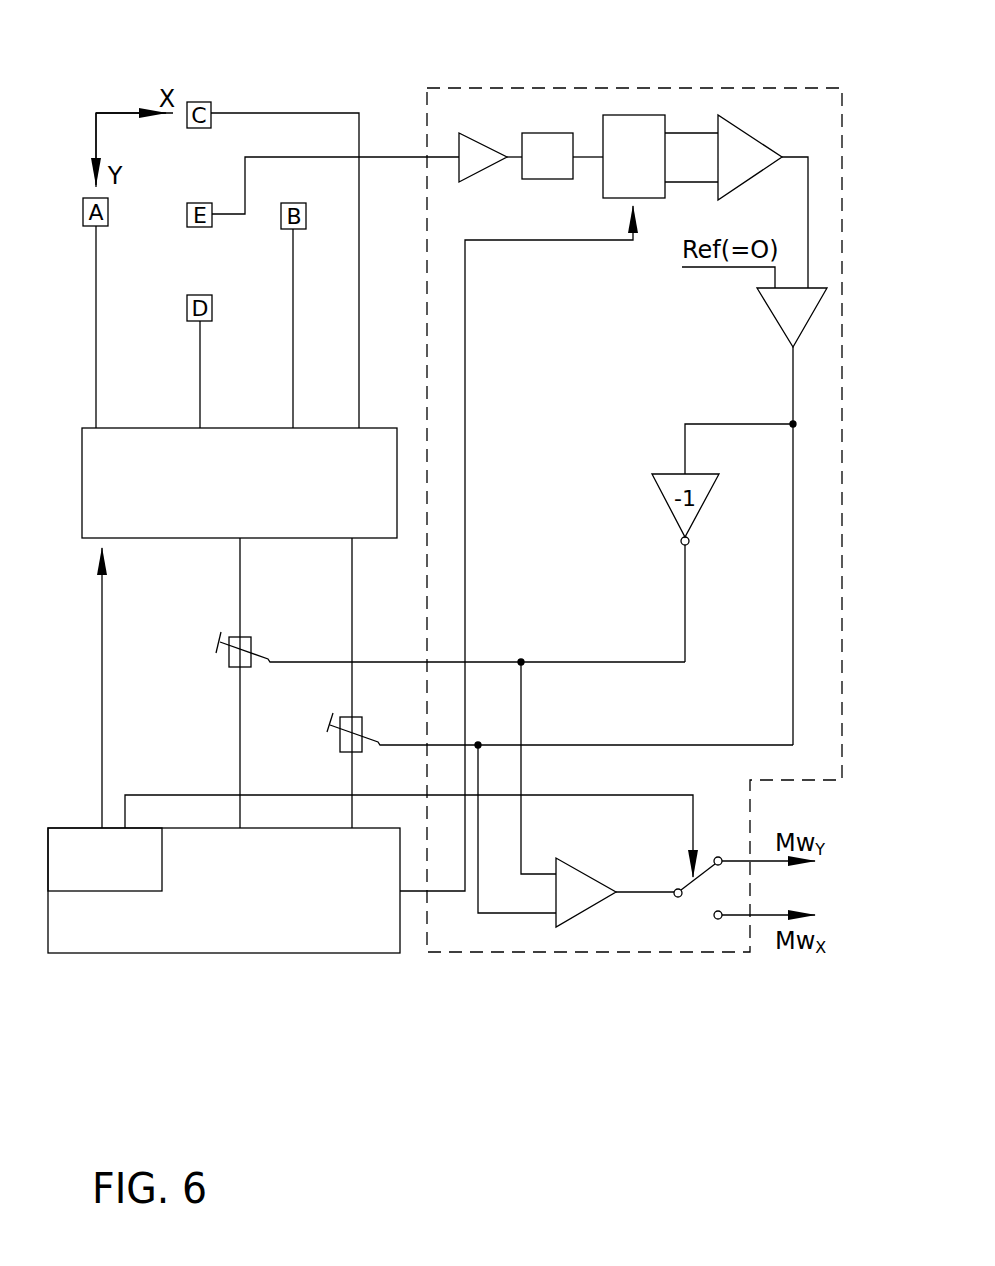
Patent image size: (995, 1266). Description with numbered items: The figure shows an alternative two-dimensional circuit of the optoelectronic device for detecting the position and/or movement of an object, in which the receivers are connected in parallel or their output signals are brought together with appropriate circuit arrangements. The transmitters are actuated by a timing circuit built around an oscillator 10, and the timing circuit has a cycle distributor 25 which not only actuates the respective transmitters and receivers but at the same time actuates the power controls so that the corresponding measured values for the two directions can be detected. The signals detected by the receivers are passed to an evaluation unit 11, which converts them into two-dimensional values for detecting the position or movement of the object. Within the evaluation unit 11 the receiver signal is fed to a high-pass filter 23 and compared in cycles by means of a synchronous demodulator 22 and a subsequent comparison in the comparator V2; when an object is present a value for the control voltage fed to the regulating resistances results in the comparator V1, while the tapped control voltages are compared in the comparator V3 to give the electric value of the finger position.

The oscillator 10 is at (350, 936).
The evaluation unit 11 is at (492, 107).
The synchronous demodulator 22 is at (637, 148).
The high-pass filter 23 is at (548, 148).
The cycle distributor 25 is at (345, 511).
The comparator V I V1 is at (742, 149).
The comparator V II V2 is at (787, 313).
The comparator V III V3 is at (575, 906).